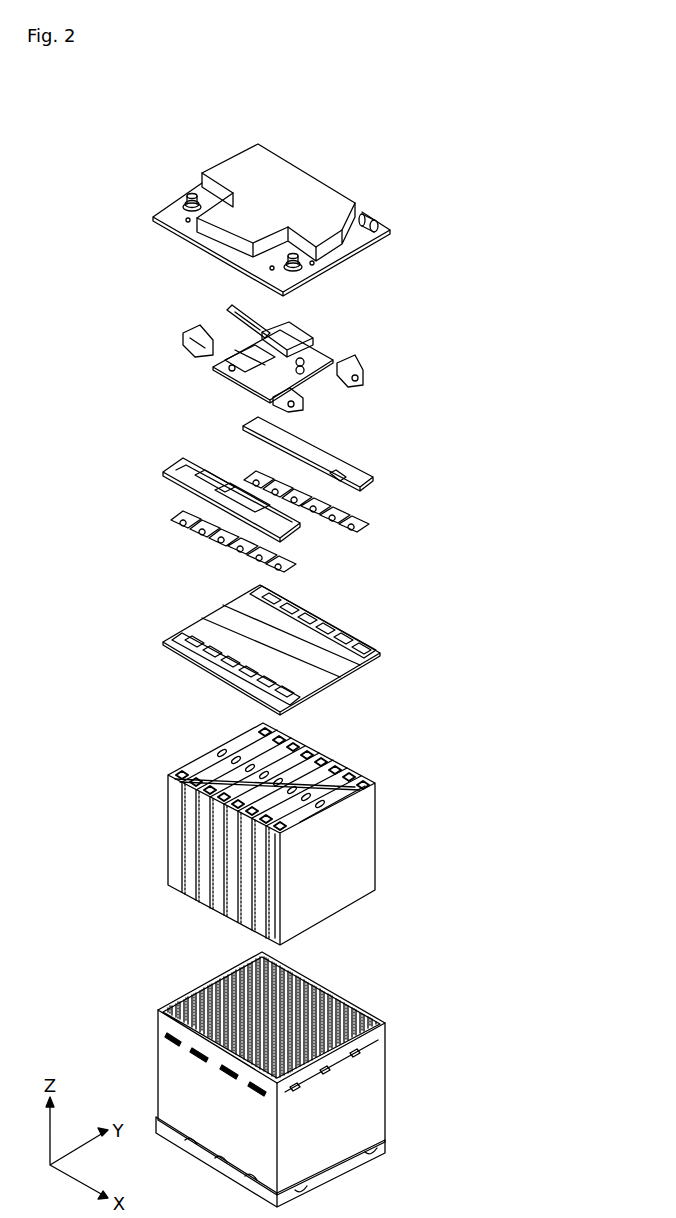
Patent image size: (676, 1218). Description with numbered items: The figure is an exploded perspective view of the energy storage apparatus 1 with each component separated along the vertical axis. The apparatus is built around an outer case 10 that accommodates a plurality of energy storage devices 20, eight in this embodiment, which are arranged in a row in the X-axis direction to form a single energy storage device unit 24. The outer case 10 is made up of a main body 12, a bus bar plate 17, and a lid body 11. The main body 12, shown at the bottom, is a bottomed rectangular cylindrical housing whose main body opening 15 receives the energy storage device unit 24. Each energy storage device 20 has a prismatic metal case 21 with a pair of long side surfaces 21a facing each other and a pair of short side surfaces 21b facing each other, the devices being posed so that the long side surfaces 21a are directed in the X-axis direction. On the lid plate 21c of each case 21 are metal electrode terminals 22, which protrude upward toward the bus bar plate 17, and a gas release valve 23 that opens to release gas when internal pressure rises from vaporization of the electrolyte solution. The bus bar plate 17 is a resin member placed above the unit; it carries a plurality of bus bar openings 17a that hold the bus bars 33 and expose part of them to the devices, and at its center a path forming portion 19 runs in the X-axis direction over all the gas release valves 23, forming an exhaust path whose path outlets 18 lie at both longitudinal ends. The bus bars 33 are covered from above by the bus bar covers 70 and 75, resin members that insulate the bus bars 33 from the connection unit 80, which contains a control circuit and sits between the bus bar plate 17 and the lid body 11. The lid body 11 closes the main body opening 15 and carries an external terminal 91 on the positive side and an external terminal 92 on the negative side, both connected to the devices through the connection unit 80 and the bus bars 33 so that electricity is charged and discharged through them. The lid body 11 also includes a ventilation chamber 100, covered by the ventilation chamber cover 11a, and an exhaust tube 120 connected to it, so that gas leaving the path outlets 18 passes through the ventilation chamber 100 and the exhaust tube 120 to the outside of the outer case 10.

The energy storage apparatus 1 is at (398, 133).
The outer case 10 is at (552, 467).
The lid body 11 is at (352, 270).
The ventilation chamber cover 11a is at (310, 222).
The main body 12 is at (386, 1067).
The main body opening 15 is at (188, 983).
The bus bar plate 17 is at (353, 636).
The bus bar opening 17a is at (183, 633).
The path outlet 18 is at (221, 606).
The path forming portion 19 is at (279, 647).
The energy storage device 20 is at (177, 883).
The case 21 is at (377, 862).
The long side surface 21a is at (333, 885).
The short side surface 21b is at (273, 915).
The lid plate 21c is at (343, 797).
The electrode terminal 22 is at (362, 779).
The gas release valve 23 is at (239, 752).
The energy storage device unit 24 is at (160, 755).
The bus bar 33 is at (362, 535).
The bus bar cover 70 is at (350, 467).
The bus bar cover 75 is at (182, 470).
The connection unit 80 is at (368, 352).
The external terminal 91 is at (292, 255).
The external terminal 92 is at (193, 192).
The ventilation chamber 100 is at (318, 204).
The exhaust tube 120 is at (372, 217).